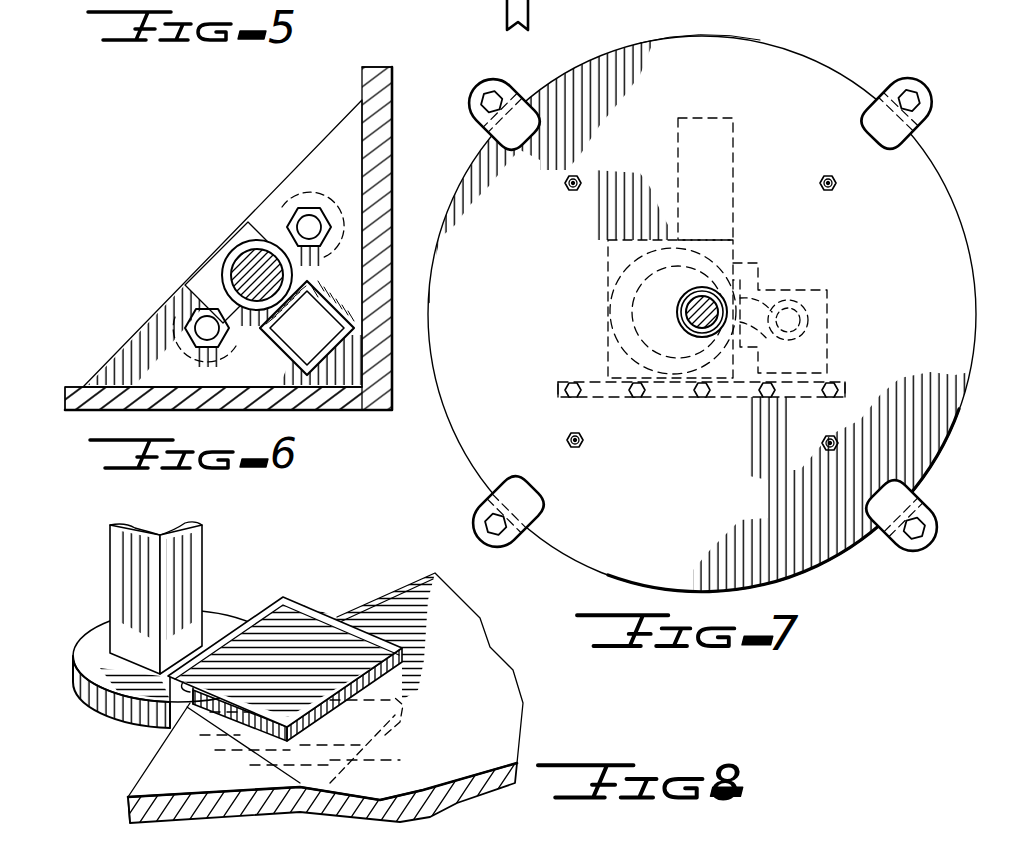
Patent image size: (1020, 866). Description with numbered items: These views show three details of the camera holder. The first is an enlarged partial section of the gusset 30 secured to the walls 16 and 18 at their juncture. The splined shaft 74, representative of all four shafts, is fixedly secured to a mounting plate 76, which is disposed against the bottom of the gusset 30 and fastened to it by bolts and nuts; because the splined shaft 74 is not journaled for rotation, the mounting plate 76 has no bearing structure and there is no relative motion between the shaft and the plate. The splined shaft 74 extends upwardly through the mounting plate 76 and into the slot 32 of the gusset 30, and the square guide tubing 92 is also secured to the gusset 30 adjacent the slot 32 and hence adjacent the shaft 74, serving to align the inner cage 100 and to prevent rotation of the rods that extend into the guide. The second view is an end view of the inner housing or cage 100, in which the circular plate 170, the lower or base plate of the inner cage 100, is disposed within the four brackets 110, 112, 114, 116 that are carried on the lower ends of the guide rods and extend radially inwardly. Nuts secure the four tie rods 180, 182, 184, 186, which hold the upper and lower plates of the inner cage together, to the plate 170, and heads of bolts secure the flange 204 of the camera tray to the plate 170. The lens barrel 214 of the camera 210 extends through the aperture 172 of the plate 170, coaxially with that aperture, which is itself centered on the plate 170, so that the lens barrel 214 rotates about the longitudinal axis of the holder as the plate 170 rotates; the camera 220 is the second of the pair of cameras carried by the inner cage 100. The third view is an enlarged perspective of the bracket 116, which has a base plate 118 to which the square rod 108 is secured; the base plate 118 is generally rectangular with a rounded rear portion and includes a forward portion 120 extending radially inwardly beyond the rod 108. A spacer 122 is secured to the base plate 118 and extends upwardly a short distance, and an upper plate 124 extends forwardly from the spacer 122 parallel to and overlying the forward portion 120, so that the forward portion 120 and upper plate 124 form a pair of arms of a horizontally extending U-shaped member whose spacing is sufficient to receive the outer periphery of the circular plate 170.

In FIG. 6, the wall 16 is at (386, 170).
In FIG. 6, the wall 18 is at (73, 388).
In FIG. 6, the gusset 30 is at (328, 153).
In FIG. 6, the slot 32 is at (257, 230).
In FIG. 6, the splined shaft 74 is at (243, 262).
In FIG. 6, the mounting plate 76 is at (216, 263).
In FIG. 6, the square guide tubing 92 is at (298, 329).
In FIG. 7, the inner housing or cage 100 is at (838, 42).
In FIG. 7, the bracket 110 is at (922, 500).
In FIG. 7, the bracket 112 is at (932, 111).
In FIG. 7, the bracket 114 is at (498, 82).
In FIG. 7, the bracket 116 is at (490, 505).
In FIG. 8, the bracket 116 is at (128, 737).
In FIG. 7, the circular plate 170 is at (928, 169).
In FIG. 7, the aperture 172 is at (688, 299).
In FIG. 7, the tie rod 180 is at (838, 437).
In FIG. 7, the tie rod 182 is at (835, 157).
In FIG. 7, the tie rod 184 is at (578, 176).
In FIG. 7, the tie rod 186 is at (582, 440).
In FIG. 7, the flange 204 is at (733, 400).
In FIG. 7, the camera 210 is at (596, 313).
In FIG. 7, the lens barrel 214 is at (700, 320).
In FIG. 7, the camera 220 is at (830, 336).
In FIG. 8, the rod 108 is at (198, 561).
In FIG. 8, the base plate 118 is at (98, 629).
In FIG. 8, the forward portion 120 is at (362, 757).
In FIG. 8, the spacer 122 is at (192, 690).
In FIG. 8, the upper plate 124 is at (303, 620).